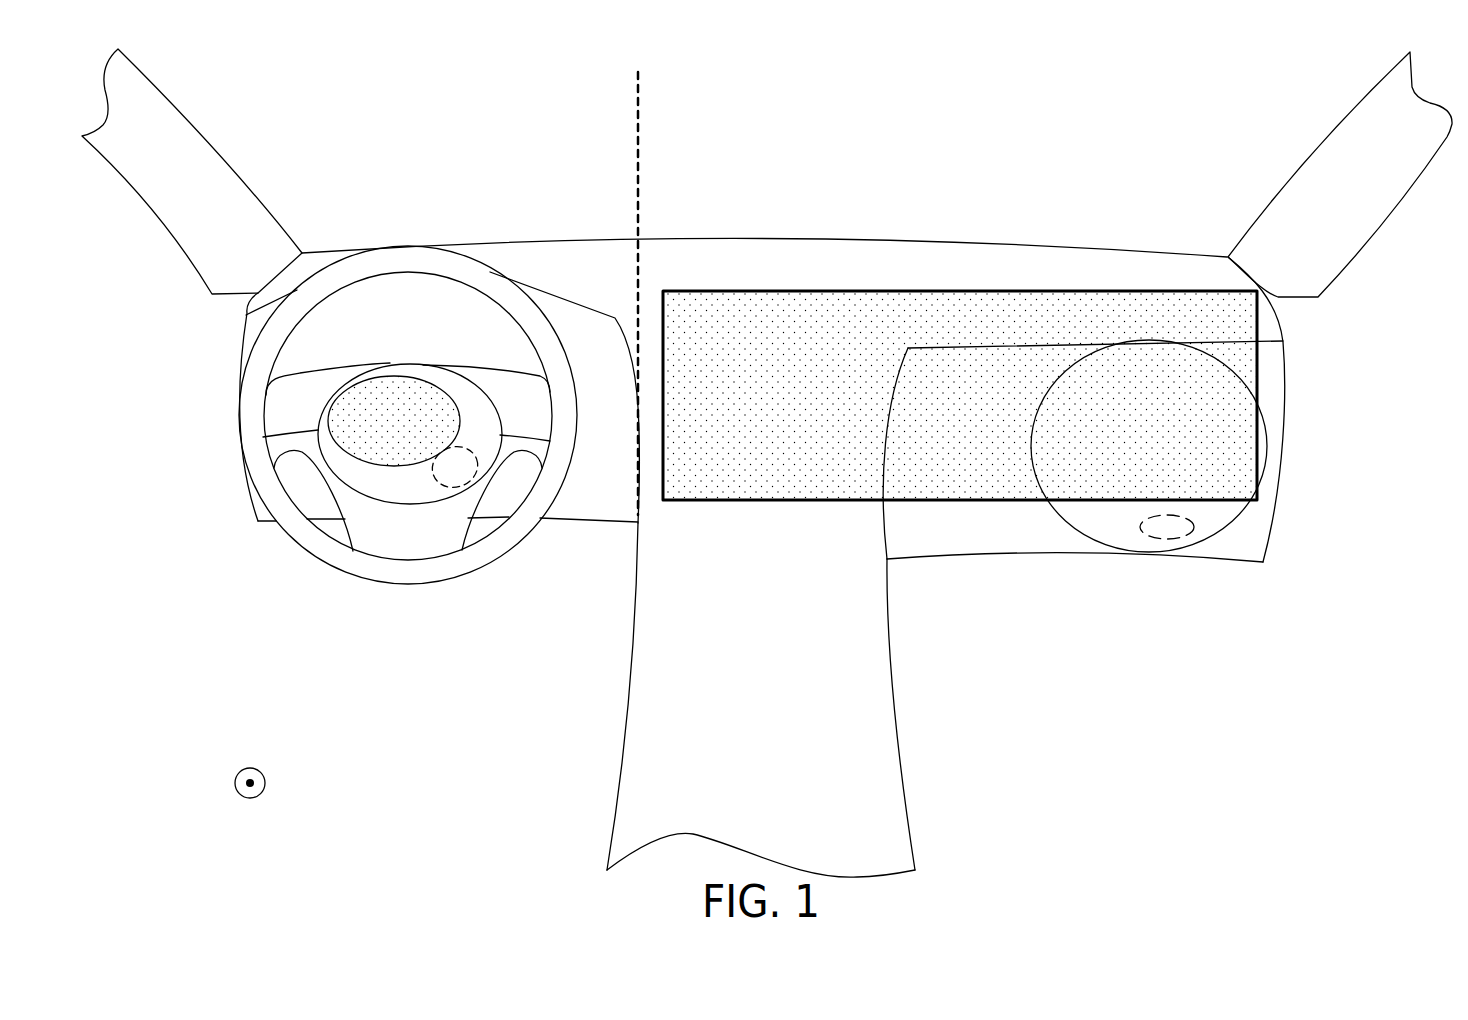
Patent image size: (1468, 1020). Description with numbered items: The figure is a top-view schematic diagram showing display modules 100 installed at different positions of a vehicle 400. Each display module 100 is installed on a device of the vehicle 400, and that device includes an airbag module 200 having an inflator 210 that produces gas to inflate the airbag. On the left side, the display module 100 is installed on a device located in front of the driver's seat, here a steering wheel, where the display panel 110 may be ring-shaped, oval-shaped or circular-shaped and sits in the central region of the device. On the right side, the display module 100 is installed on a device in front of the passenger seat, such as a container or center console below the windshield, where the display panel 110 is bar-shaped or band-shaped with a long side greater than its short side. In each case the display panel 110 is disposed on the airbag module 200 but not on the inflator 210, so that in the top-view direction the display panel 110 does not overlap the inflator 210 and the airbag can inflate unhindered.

The vehicle 400 is at (767, 455).
The display module 100 is at (792, 416).
The display panel 110 is at (390, 443).
The airbag module 200 is at (320, 436).
The inflator 210 is at (448, 473).